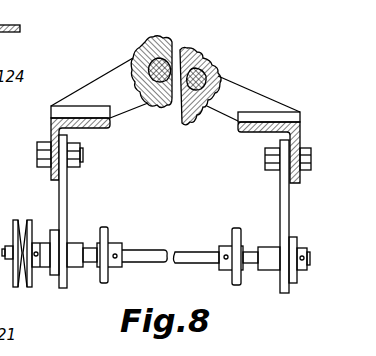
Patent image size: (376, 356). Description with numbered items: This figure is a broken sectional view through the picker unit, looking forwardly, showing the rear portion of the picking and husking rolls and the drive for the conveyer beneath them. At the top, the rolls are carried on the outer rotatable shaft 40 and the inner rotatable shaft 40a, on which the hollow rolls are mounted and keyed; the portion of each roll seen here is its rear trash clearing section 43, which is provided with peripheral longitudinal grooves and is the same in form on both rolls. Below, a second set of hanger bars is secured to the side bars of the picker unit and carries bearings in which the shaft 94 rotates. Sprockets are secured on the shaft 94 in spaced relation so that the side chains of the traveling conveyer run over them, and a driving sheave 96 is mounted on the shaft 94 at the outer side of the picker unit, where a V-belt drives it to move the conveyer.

The outer rotatable shaft 40 is at (137, 56).
The inner rotatable shaft 40a is at (216, 62).
The rear trash clearing section 43 is at (198, 48).
The shaft 94 is at (158, 262).
The driving sheave 96 is at (22, 221).